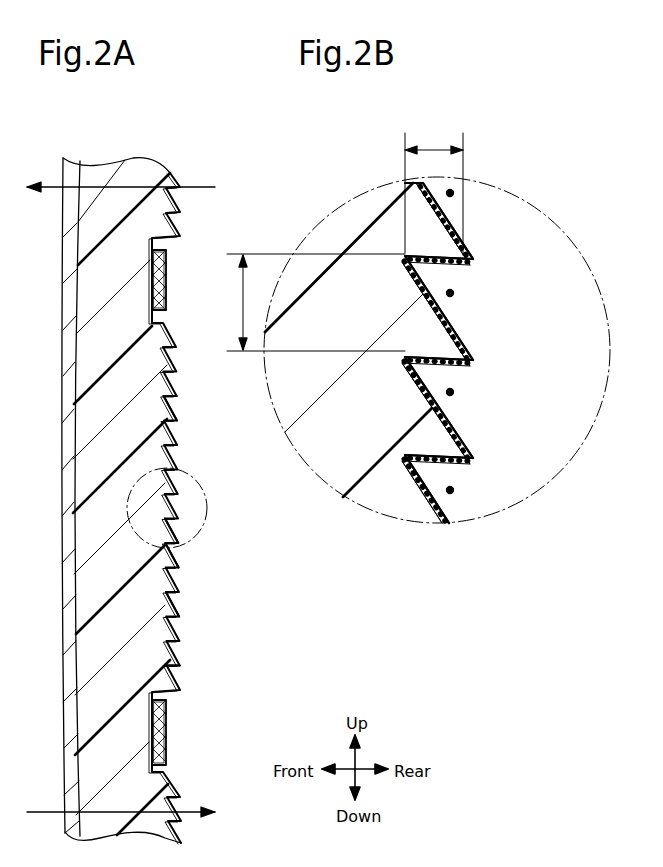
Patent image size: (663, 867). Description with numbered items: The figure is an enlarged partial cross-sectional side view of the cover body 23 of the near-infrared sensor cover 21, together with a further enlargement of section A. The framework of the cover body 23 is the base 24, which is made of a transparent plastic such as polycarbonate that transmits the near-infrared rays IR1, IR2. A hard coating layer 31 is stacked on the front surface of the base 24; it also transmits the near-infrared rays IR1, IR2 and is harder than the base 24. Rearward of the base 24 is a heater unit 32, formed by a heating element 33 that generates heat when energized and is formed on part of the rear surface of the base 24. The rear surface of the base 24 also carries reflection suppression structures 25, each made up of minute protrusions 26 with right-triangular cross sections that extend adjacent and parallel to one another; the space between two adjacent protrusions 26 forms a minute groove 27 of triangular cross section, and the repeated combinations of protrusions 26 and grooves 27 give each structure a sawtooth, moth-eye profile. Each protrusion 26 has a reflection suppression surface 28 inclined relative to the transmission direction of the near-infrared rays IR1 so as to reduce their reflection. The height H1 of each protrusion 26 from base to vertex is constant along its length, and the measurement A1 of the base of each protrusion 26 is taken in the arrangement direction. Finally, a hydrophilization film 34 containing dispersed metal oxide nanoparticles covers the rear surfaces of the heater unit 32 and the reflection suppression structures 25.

In FIG. 2A, the near-infrared sensor cover 21 is at (155, 469).
In FIG. 2A, the cover body 23 is at (155, 469).
In FIG. 2B, the cover body 23 is at (348, 371).
In FIG. 2A, the base 24 is at (137, 170).
In FIG. 2B, the base 24 is at (322, 485).
In FIG. 2A, the reflection suppression structure 25 is at (166, 194).
In FIG. 2B, the reflection suppression structure 25 is at (568, 282).
In FIG. 2A, the protrusion 26 is at (178, 415).
In FIG. 2B, the protrusion 26 is at (440, 243).
In FIG. 2A, the groove 27 is at (178, 385).
In FIG. 2B, the groove 27 is at (450, 193).
In FIG. 2B, the reflection suppression surface 28 is at (443, 207).
In FIG. 2A, the hard coating layer 31 is at (70, 170).
In FIG. 2A, the heater unit 32 is at (211, 496).
In FIG. 2A, the heating element 33 is at (160, 272).
In FIG. 2A, the hydrophilization film 34 is at (182, 570).
In FIG. 2B, the hydrophilization film 34 is at (458, 407).
In FIG. 2A, the section A is at (207, 508).
In FIG. 2B, the section A is at (564, 473).
In FIG. 2A, the measurement of the base of each protrusion A1 is at (242, 318).
In FIG. 2B, the height of each protrusion H1 is at (433, 149).
In FIG. 2A, the near-infrared rays IR1 is at (193, 187).
In FIG. 2A, the near-infrared rays IR2 is at (188, 812).